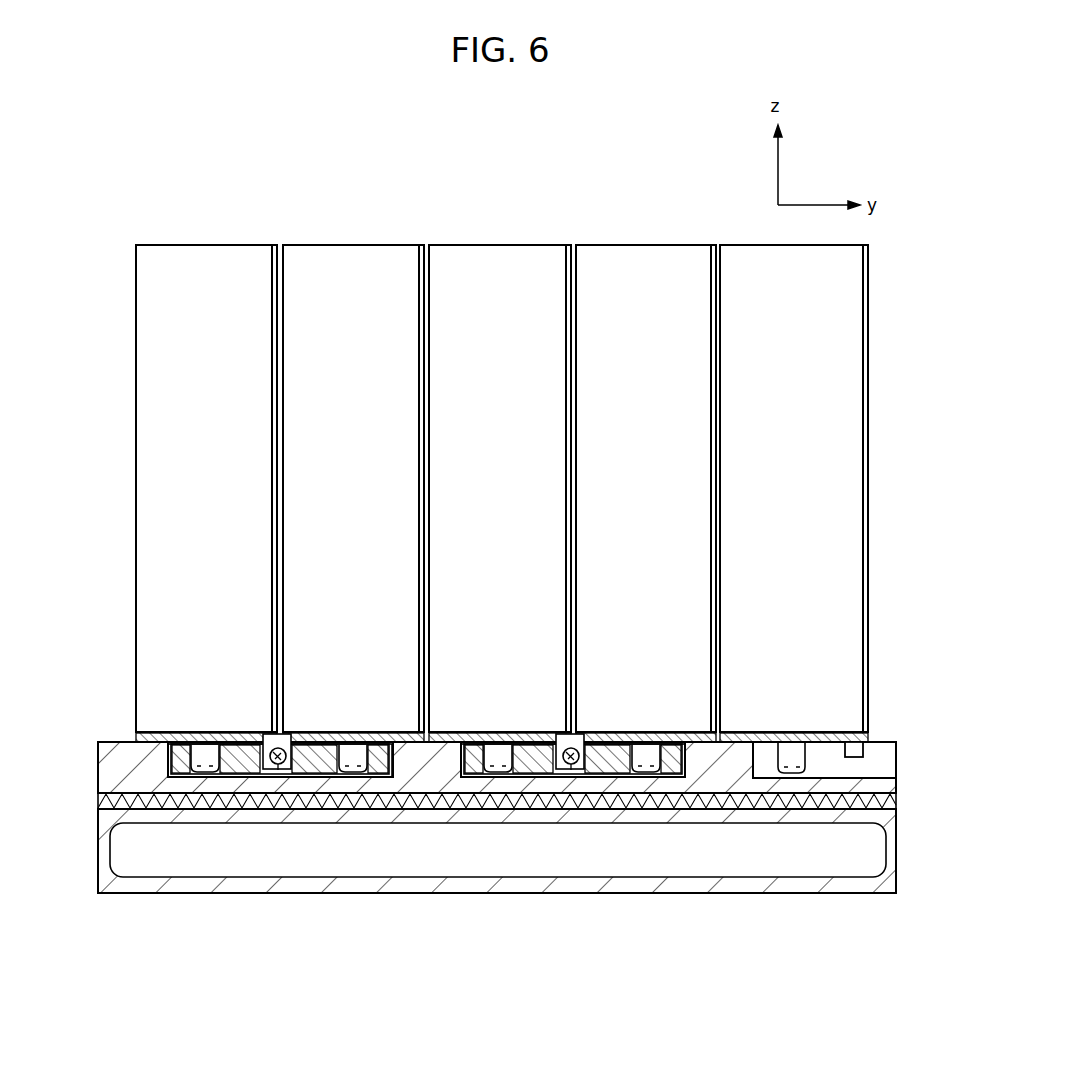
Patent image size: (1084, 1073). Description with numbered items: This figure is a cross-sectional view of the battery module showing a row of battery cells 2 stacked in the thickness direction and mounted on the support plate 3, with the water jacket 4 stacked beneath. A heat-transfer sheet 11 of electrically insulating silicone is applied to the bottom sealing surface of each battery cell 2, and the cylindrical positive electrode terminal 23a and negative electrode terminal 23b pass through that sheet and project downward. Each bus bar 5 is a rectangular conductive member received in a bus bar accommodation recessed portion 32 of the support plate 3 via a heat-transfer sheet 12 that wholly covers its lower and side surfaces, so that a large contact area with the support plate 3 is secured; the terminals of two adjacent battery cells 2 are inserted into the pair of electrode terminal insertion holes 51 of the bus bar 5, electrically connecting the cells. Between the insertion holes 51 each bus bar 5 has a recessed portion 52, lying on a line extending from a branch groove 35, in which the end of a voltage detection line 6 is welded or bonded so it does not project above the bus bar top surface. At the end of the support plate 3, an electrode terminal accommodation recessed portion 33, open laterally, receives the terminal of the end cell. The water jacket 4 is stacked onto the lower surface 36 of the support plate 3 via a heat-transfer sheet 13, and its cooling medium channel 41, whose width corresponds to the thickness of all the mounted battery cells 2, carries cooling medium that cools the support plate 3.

The battery cell 2 is at (363, 237).
The support plate 3 is at (118, 758).
The water jacket 4 is at (890, 870).
The bus bar 5 is at (236, 750).
The voltage detection line 6 is at (282, 770).
The heat-transfer sheet 11 is at (150, 741).
The heat-transfer sheet 12 is at (168, 764).
The heat-transfer sheet 13 is at (890, 803).
The positive electrode terminal 23a is at (192, 742).
The negative electrode terminal 23b is at (356, 744).
The bus bar accommodation recessed portion 32 is at (416, 746).
The electrode terminal accommodation recessed portion 33 is at (887, 768).
The branch groove 35 is at (863, 749).
The lower surface 36 is at (105, 800).
The cooling medium channel 41 is at (857, 840).
The electrode terminal insertion hole 51 is at (205, 742).
The recessed portion 52 is at (264, 750).